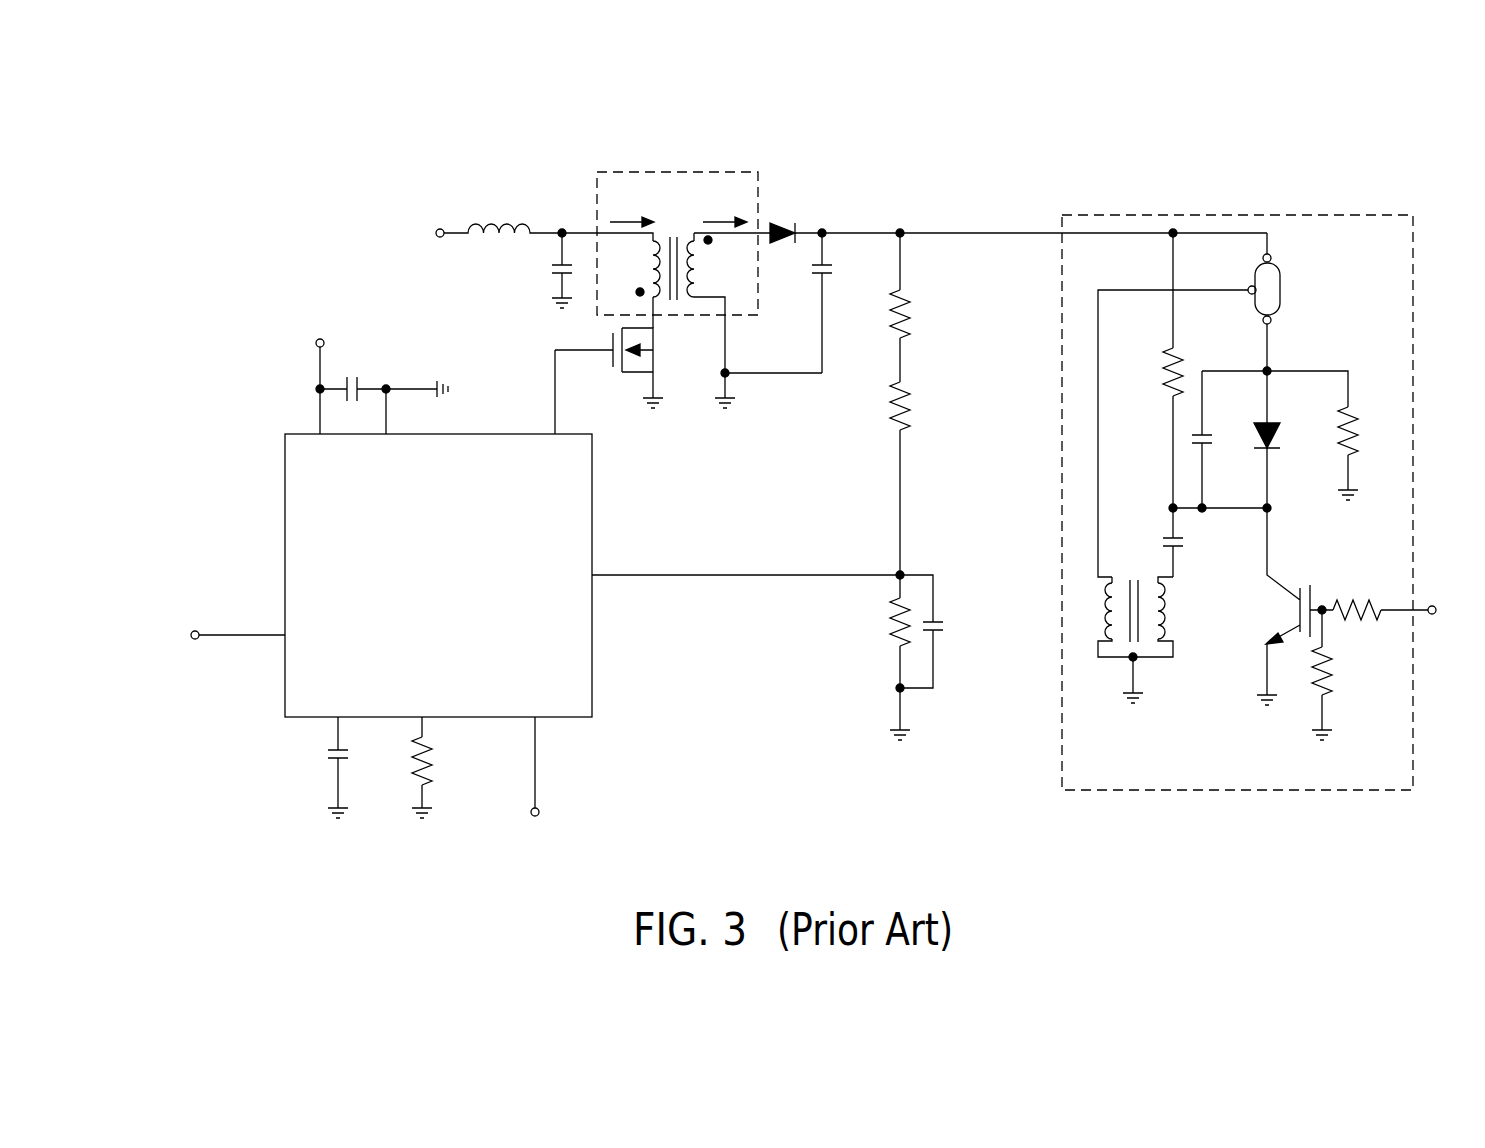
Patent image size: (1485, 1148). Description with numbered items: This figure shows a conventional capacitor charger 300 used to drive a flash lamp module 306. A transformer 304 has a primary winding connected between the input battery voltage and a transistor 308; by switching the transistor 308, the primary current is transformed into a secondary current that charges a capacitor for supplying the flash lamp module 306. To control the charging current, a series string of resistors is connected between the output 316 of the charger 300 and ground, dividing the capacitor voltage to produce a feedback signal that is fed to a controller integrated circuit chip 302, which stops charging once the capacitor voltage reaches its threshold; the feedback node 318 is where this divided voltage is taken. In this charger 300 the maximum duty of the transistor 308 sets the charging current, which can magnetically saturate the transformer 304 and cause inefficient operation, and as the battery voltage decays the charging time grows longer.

The capacitor charger 300 is at (958, 132).
The controller integrated circuit chip 302 is at (285, 526).
The transformer 304 is at (678, 172).
The flash lamp module 306 is at (1233, 215).
The transistor 308 is at (601, 344).
The output 316 is at (822, 230).
The feedback node 318 is at (904, 573).